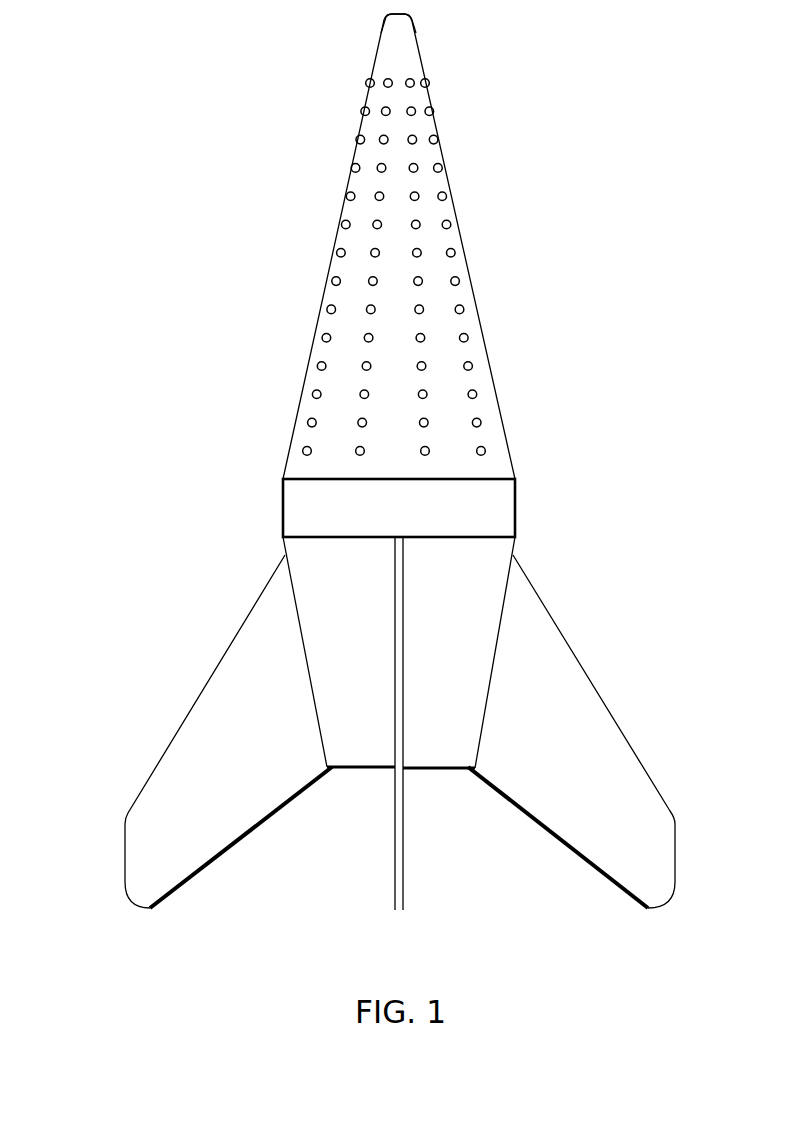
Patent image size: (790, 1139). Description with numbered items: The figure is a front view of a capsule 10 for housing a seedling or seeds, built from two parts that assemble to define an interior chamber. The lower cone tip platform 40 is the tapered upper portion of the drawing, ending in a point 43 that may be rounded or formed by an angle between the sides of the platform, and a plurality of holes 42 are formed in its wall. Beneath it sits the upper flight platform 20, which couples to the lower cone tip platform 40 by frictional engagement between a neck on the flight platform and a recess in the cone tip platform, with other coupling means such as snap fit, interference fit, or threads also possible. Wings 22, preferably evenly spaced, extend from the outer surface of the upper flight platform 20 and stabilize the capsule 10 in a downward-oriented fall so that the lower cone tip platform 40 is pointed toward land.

The capsule 10 is at (380, 462).
The upper flight platform 20 is at (468, 587).
The wings 22 is at (168, 832).
The lower cone tip platform 40 is at (322, 328).
The holes 42 is at (465, 311).
The point 43 is at (384, 19).